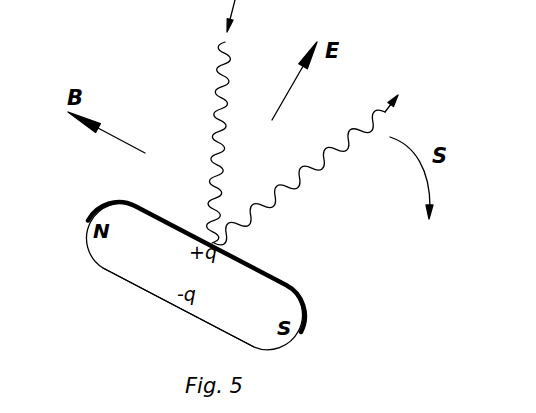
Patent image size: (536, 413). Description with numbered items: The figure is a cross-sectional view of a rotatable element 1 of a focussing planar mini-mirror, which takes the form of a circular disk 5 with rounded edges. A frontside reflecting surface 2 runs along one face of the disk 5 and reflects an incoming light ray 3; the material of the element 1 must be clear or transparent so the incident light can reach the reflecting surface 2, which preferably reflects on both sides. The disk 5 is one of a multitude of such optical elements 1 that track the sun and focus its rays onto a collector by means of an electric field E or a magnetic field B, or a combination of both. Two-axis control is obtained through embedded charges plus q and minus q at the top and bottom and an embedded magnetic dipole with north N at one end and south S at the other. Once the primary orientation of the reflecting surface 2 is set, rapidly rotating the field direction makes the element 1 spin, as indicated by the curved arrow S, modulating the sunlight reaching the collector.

The rotatable element 1 is at (162, 340).
The frontside reflecting surface 2 is at (273, 278).
The light ray 3 is at (221, 78).
The circular disk 5 is at (140, 288).